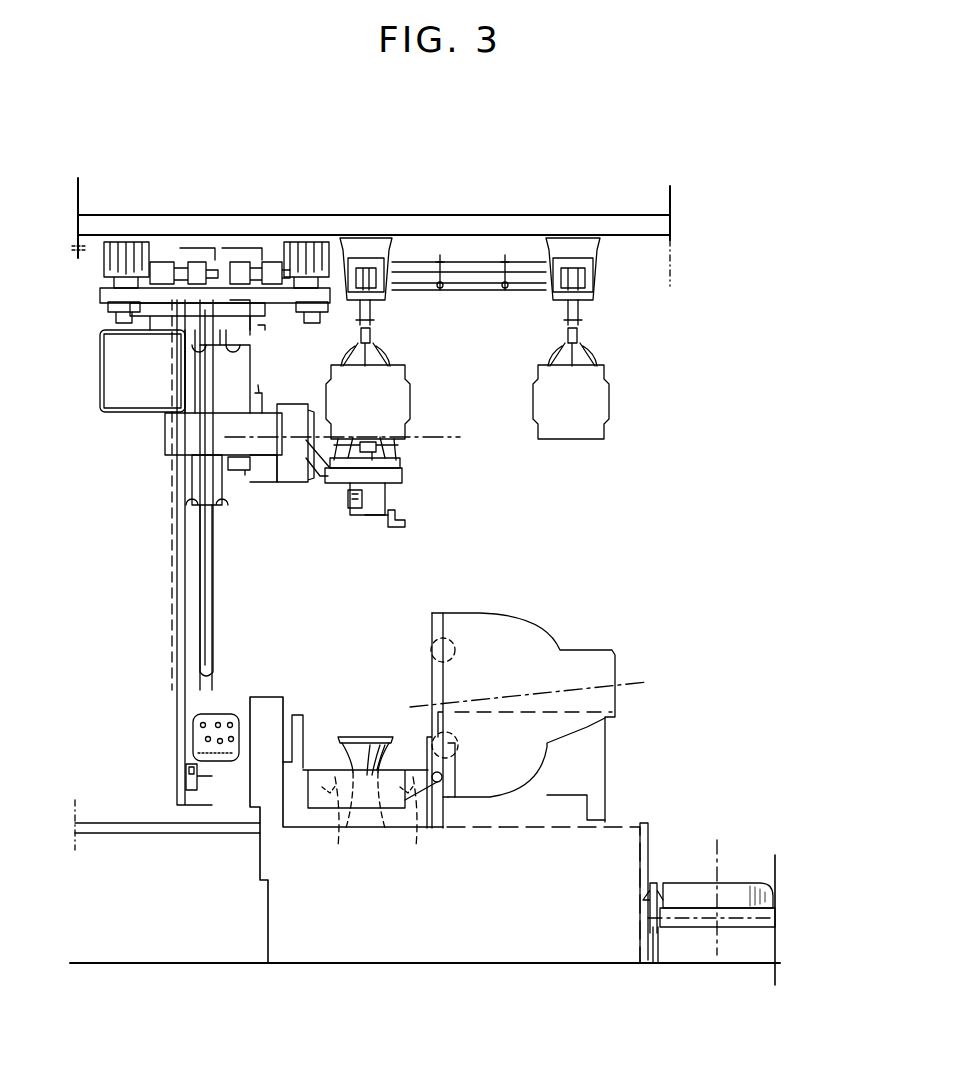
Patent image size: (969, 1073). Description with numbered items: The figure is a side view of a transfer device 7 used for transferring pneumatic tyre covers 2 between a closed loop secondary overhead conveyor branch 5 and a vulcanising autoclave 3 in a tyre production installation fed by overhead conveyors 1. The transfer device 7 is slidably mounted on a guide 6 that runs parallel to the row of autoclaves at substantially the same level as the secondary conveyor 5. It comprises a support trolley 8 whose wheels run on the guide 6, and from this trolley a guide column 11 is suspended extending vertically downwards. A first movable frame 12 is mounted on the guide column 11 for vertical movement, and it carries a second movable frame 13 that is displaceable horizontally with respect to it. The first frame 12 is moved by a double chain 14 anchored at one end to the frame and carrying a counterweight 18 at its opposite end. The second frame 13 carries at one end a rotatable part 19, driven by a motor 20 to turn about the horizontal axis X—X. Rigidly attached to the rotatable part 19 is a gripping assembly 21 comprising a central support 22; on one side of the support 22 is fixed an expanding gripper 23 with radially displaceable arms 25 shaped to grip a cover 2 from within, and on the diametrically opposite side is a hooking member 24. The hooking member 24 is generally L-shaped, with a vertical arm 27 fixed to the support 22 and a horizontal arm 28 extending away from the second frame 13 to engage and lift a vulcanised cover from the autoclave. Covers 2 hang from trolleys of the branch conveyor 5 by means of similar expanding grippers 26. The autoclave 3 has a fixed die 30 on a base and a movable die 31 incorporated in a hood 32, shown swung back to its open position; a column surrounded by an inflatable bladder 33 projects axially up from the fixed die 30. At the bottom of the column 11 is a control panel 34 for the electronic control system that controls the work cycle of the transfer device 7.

The overhead conveyor 1 is at (563, 237).
The pneumatic tyre cover 2 is at (400, 378).
The vulcanising autoclave 3 is at (356, 682).
The secondary overhead conveyor branch 5 is at (387, 237).
The guide 6 is at (125, 239).
The transfer device 7 is at (165, 607).
The support trolley 8 is at (110, 300).
The guide column 11 is at (191, 568).
The first movable frame 12 is at (182, 465).
The second movable frame 13 is at (170, 434).
The double chain 14 is at (182, 352).
The counterweight 18 is at (165, 692).
The rotatable part 19 is at (308, 408).
The motor 20 is at (241, 472).
The gripping assembly 21 is at (425, 486).
The central support 22 is at (330, 488).
The expanding gripper 23 is at (442, 468).
The hooking member 24 is at (432, 518).
The radially displaceable arm 25 is at (395, 462).
The expanding gripper 26 is at (405, 337).
The vertical arm 27 is at (392, 528).
The horizontal arm 28 is at (381, 518).
The fixed die 30 is at (420, 860).
The movable die 31 is at (437, 648).
The hood 32 is at (475, 615).
The bladder 33 is at (359, 740).
The control panel 34 is at (186, 741).